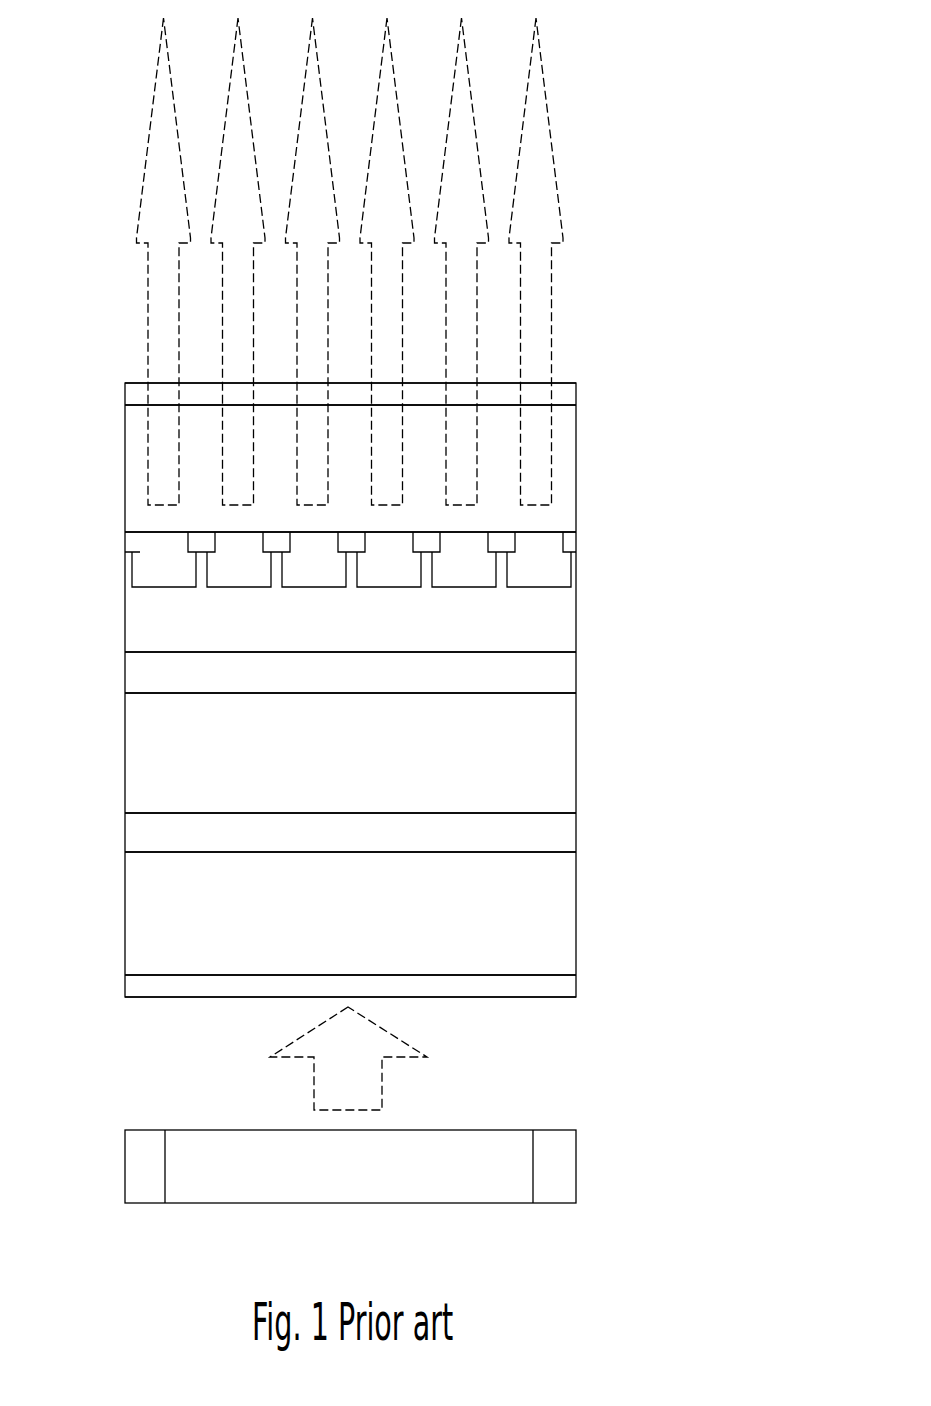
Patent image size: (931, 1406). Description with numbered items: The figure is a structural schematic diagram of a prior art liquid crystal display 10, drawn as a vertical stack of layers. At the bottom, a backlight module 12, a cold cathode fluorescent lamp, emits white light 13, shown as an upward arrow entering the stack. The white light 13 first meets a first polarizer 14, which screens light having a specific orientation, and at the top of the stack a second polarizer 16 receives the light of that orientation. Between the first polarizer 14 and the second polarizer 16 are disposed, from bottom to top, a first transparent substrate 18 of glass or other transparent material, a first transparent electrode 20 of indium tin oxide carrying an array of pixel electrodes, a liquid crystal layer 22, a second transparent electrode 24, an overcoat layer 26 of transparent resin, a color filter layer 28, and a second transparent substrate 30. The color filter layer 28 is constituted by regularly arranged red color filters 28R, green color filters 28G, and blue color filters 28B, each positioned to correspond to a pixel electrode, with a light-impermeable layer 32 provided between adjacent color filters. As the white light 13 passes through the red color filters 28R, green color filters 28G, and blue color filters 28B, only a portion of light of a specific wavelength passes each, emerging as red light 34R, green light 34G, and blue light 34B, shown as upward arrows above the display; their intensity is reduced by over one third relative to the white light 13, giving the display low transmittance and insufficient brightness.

The liquid crystal display 10 is at (578, 267).
The backlight module 12 is at (200, 1190).
The white light 13 is at (385, 1088).
The first polarizer 14 is at (135, 987).
The second polarizer 16 is at (135, 395).
The first transparent substrate 18 is at (135, 912).
The first transparent electrode 20 is at (135, 831).
The liquid crystal layer 22 is at (135, 751).
The second transparent electrode 24 is at (135, 671).
The overcoat layer 26 is at (135, 596).
The color filter layer 28 is at (376, 604).
The red color filter 28R is at (180, 577).
The green color filter 28G is at (255, 577).
The blue color filter 28B is at (330, 577).
The second transparent substrate 30 is at (135, 476).
The light-impermeable layer 32 is at (135, 541).
The red light 34R is at (167, 88).
The green light 34G is at (241, 88).
The blue light 34B is at (316, 88).